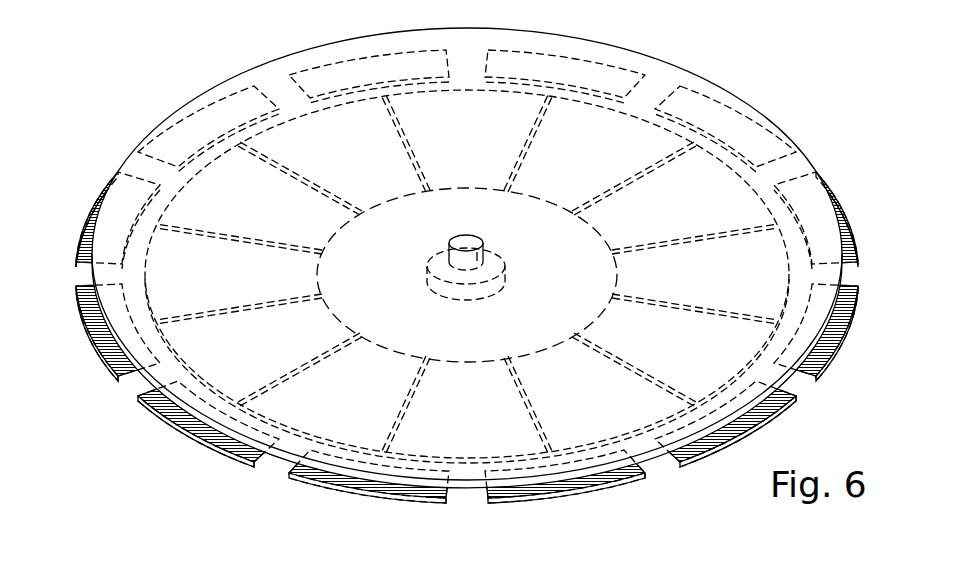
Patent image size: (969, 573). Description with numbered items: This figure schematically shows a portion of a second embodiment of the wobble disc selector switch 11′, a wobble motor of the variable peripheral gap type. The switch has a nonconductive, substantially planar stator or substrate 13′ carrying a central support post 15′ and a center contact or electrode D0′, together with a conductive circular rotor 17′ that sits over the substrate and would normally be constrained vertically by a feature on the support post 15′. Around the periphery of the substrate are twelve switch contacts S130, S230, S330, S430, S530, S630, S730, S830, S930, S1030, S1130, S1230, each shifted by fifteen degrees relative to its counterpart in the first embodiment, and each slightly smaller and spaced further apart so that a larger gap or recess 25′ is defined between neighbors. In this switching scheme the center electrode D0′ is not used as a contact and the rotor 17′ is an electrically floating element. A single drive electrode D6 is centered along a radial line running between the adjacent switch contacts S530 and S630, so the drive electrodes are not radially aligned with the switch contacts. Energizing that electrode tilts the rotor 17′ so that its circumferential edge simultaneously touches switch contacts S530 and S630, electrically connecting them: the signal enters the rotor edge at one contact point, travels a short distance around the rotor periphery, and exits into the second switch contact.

The wobble disc selector switch 11′ is at (728, 64).
The stator or substrate 13′ is at (418, 324).
The central support post 15′ is at (491, 251).
The rotor 17′ is at (230, 78).
The gap or recess 25′ is at (660, 466).
The center contact or electrode D0′ is at (507, 279).
The drive electrode D6 is at (470, 450).
The switch contact S130 is at (732, 128).
The switch contact S230 is at (841, 220).
The switch contact S330 is at (841, 332).
The switch contact S430 is at (734, 421).
The switch contact S530 is at (565, 490).
The switch contact S630 is at (369, 490).
The switch contact S730 is at (208, 427).
The switch contact S830 is at (93, 332).
The switch contact S930 is at (92, 220).
The switch contact S1030 is at (188, 129).
The switch contact S1130 is at (369, 56).
The switch contact S1230 is at (565, 56).